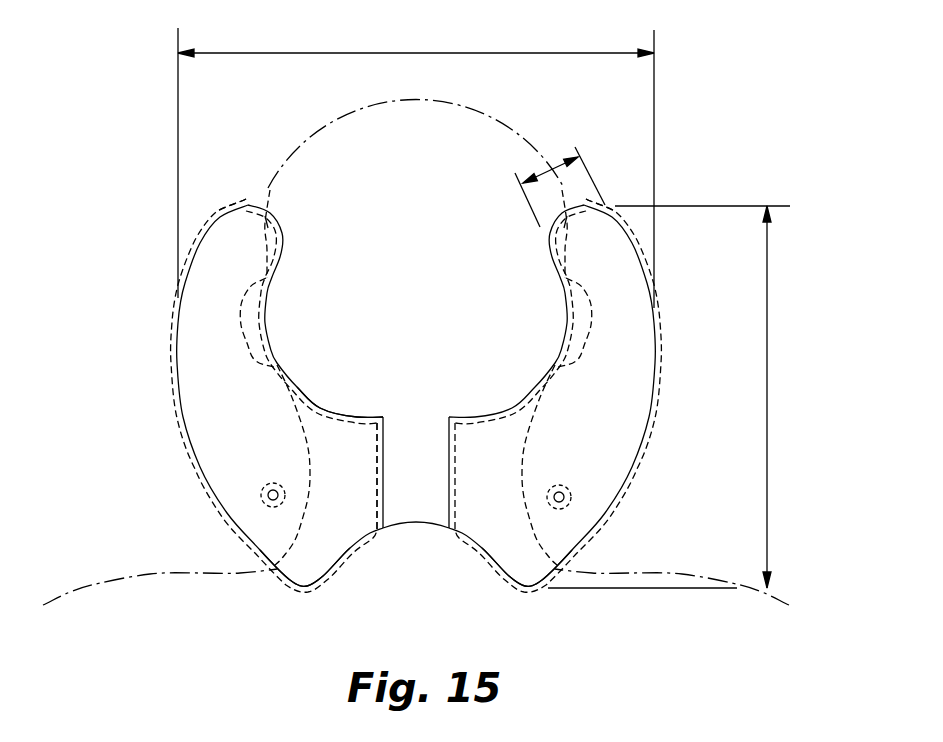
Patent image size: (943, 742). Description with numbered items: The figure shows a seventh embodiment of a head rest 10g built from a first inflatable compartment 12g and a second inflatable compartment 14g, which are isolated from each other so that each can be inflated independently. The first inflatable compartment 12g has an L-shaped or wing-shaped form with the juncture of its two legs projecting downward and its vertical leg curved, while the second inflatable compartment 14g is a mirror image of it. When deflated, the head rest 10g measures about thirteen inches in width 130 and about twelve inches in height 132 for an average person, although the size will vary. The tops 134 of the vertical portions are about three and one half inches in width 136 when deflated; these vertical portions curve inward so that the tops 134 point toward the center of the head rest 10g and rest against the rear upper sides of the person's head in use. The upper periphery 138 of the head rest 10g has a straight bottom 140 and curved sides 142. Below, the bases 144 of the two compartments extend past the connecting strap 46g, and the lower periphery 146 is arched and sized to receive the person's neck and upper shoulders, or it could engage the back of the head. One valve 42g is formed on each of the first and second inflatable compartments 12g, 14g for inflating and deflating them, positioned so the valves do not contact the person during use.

The head rest 10g is at (147, 215).
The first inflatable compartment 12g is at (230, 418).
The second inflatable compartment 14g is at (560, 418).
The valve 42g is at (260, 495).
The connecting strap 46g is at (405, 472).
The width 130 is at (450, 53).
The height 132 is at (770, 376).
The tops of the vertical portions 134 is at (253, 224).
The width of the tops 136 is at (558, 185).
The upper periphery 138 is at (422, 378).
The straight bottom 140 is at (318, 405).
The curved sides 142 is at (268, 305).
The bases 144 is at (298, 563).
The lower periphery 146 is at (417, 524).